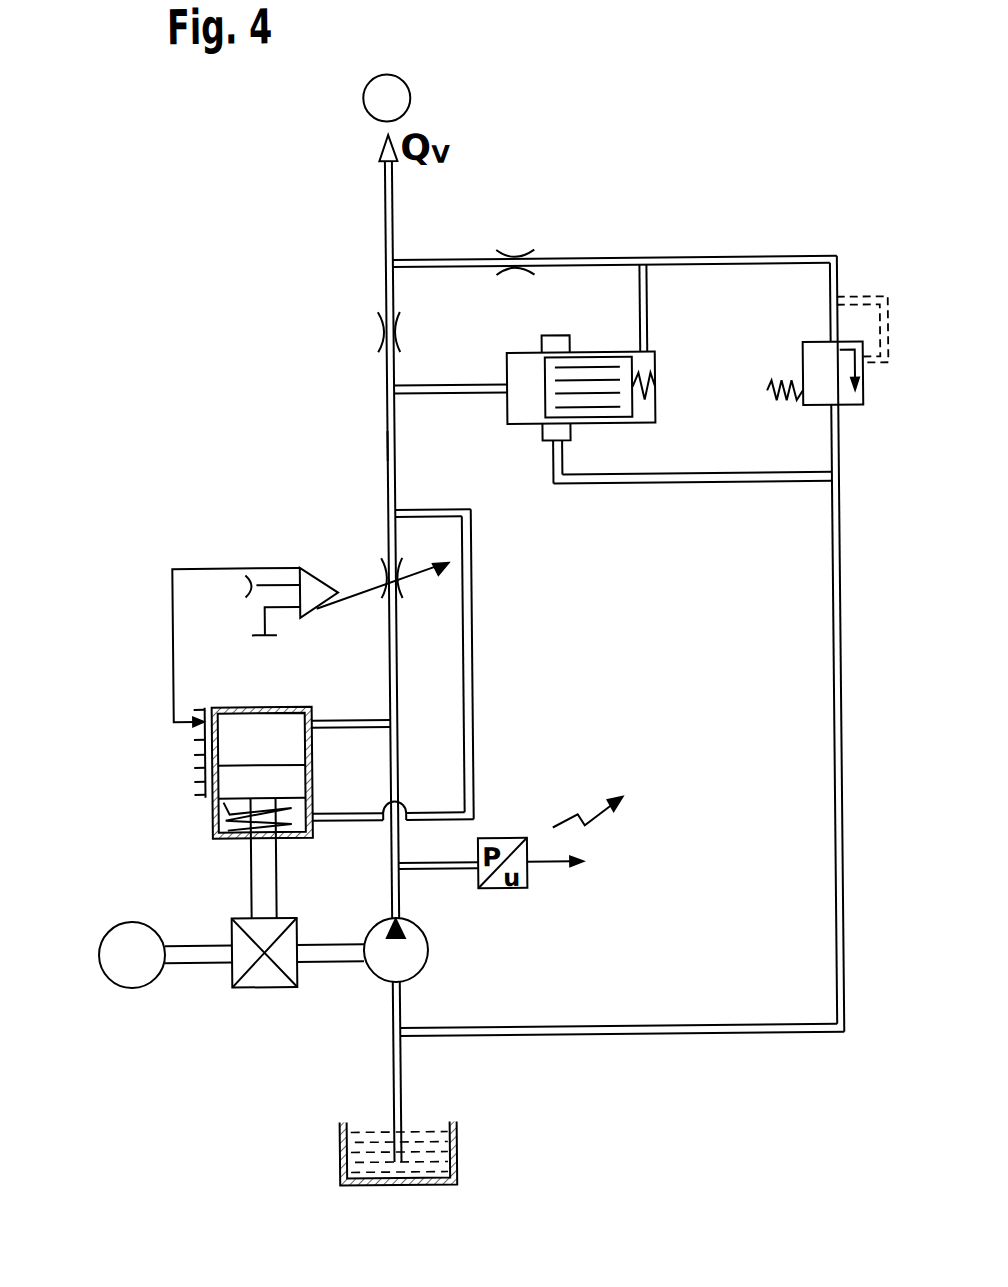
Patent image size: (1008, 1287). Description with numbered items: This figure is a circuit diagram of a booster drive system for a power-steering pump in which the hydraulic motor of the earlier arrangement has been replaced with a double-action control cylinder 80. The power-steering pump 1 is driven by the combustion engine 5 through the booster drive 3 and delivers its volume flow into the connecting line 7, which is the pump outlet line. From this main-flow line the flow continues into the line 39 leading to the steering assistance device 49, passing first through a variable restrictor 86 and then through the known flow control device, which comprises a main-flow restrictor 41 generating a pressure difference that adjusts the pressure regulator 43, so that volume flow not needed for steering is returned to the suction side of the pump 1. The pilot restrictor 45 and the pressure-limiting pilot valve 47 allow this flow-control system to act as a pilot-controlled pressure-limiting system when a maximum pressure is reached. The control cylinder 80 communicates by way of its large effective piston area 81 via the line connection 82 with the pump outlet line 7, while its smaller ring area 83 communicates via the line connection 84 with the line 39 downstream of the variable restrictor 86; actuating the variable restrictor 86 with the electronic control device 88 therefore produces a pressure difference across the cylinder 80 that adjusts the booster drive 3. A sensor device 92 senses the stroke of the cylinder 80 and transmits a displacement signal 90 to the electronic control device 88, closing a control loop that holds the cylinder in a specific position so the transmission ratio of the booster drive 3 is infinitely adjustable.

The power-steering pump 1 is at (417, 952).
The booster drive 3 is at (262, 986).
The combustion engine 5 is at (105, 951).
The connecting line 7 is at (389, 761).
The line 39 is at (390, 440).
The main-flow restrictor 41 is at (381, 321).
The pressure regulator 43 is at (606, 361).
The pilot restrictor 45 is at (525, 250).
The pressure-limiting pilot valve 47 is at (808, 361).
The steering assistance device 49 is at (386, 97).
The double-action control cylinder 80 is at (237, 724).
The large effective piston area 81 is at (261, 762).
The line connection 82 is at (368, 717).
The smaller ring area 83 is at (212, 811).
The line connection 84 is at (468, 672).
The variable restrictor 86 is at (386, 563).
The electronic control device 88 is at (311, 595).
The displacement signal 90 is at (173, 665).
The sensor device 92 is at (194, 746).